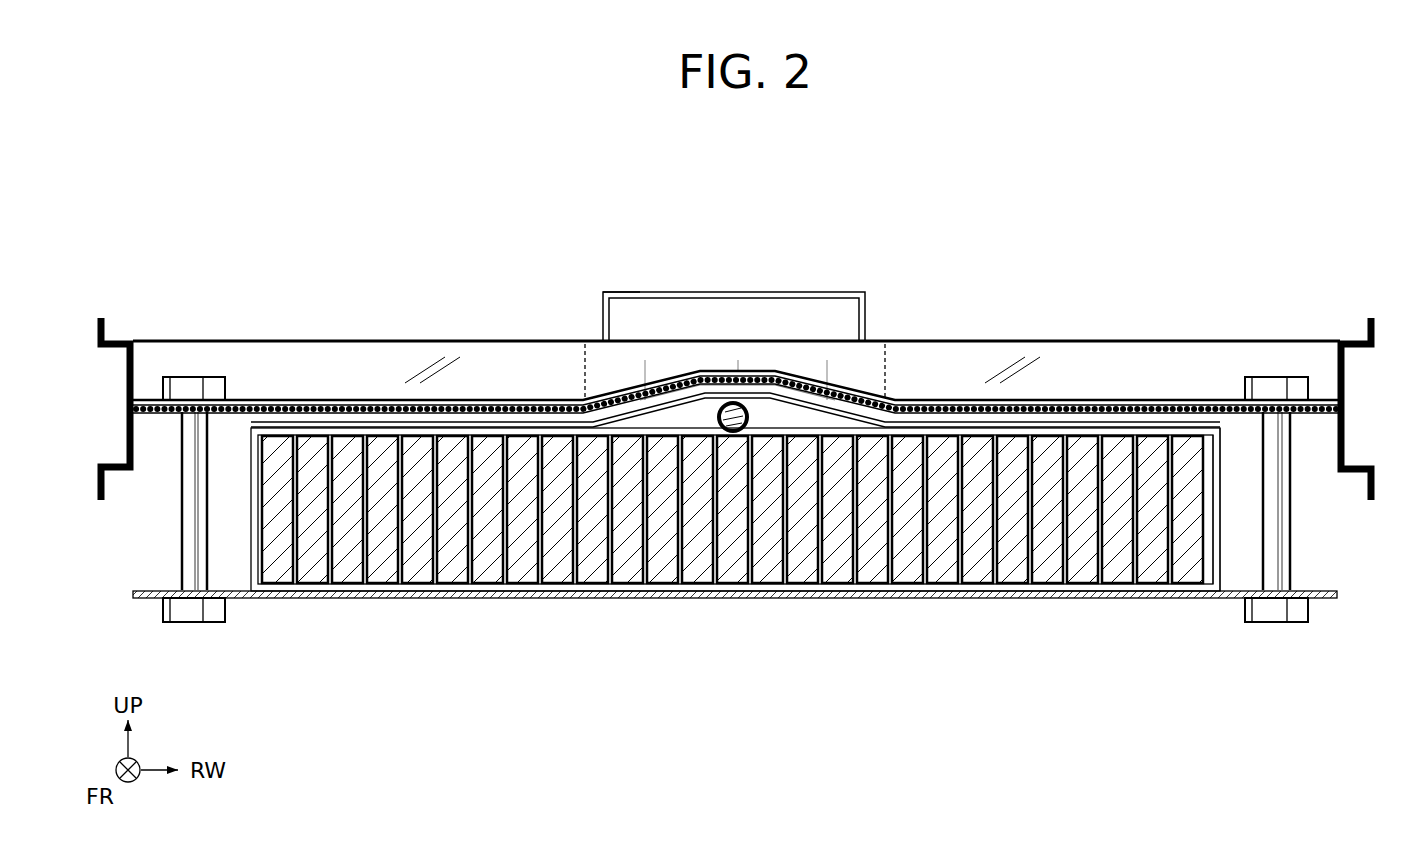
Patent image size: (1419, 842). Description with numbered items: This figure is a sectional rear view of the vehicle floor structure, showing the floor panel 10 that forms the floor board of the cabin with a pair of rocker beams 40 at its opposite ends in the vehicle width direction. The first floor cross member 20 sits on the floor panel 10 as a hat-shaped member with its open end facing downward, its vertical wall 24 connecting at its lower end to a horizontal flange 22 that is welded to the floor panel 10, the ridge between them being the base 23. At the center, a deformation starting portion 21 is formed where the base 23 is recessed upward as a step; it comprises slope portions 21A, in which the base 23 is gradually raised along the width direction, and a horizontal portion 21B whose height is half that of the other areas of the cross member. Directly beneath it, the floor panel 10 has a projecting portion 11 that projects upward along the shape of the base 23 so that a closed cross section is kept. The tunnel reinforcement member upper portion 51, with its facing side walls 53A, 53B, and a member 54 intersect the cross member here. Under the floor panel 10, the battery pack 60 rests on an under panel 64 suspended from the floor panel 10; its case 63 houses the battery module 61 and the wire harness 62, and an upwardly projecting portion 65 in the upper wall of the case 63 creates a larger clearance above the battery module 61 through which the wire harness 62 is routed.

The floor panel 10 is at (232, 414).
The projecting portion 11 is at (632, 389).
The first floor cross member 20 is at (334, 334).
The deformation starting portion 21 is at (827, 233).
The slope portion 21A is at (645, 360).
The horizontal portion 21B is at (738, 360).
The flange 22 is at (290, 398).
The base 23 is at (177, 412).
The vertical wall 24 is at (222, 360).
The rocker beam 40 is at (100, 319).
The tunnel reinforcement member upper portion 51 is at (631, 288).
The side wall 53A is at (600, 315).
The side wall 53B is at (868, 312).
The cover member 54 is at (840, 291).
The battery pack 60 is at (249, 546).
The battery module 61 is at (1220, 568).
The wire harness 62 is at (752, 416).
The case 63 is at (1216, 558).
The under panel 64 is at (1317, 600).
The projecting portion 65 is at (710, 399).